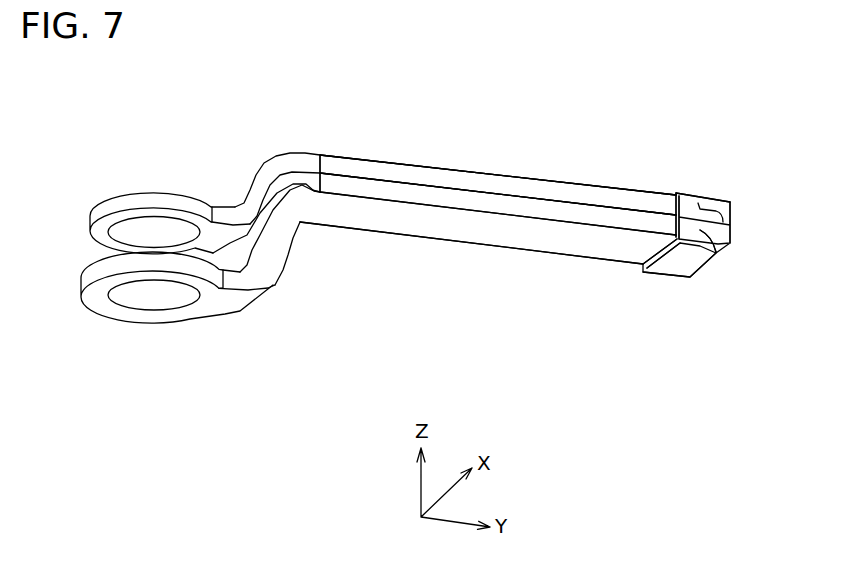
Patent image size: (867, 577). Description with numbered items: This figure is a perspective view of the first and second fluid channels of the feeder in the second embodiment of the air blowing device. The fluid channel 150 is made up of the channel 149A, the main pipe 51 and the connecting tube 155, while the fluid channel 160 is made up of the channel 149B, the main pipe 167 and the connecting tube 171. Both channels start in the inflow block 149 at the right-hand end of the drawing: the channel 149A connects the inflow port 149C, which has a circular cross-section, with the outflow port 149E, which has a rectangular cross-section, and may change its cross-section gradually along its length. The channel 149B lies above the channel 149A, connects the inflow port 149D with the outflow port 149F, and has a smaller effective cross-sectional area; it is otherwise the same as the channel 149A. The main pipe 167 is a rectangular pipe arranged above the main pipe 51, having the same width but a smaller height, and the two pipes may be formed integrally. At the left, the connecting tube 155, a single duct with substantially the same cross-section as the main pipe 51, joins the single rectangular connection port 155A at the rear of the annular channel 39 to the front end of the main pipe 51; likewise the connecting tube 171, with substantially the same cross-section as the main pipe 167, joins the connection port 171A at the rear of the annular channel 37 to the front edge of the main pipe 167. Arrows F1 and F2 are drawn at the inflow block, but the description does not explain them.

The annular channel 37 is at (137, 193).
The annular channel 39 is at (148, 323).
The main pipe 51 is at (502, 248).
The inflow block 149 is at (688, 284).
The channel 149A is at (672, 283).
The channel 149B is at (698, 203).
The inflow port 149C is at (726, 263).
The inflow port 149D is at (732, 196).
The outflow port 149E is at (636, 268).
The outflow port 149F is at (676, 200).
The fluid channel 150 is at (422, 251).
The connecting tube 155 is at (275, 286).
The connection port 155A is at (228, 312).
The fluid channel 160 is at (434, 160).
The main pipe 167 is at (521, 178).
The connecting tube 171 is at (250, 180).
The connection port 171A is at (220, 203).
The force F1 is at (743, 255).
The force F2 is at (743, 232).